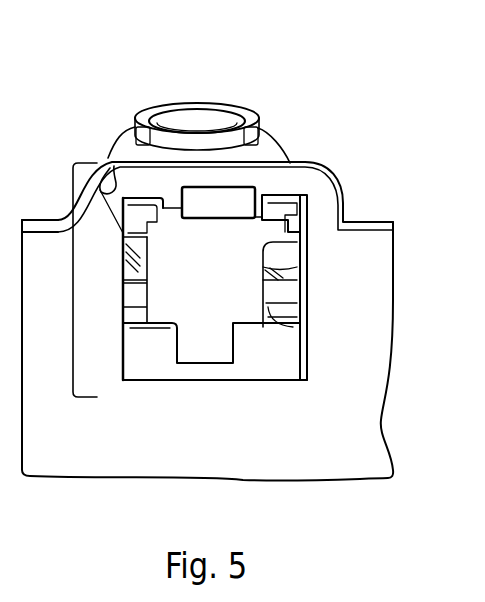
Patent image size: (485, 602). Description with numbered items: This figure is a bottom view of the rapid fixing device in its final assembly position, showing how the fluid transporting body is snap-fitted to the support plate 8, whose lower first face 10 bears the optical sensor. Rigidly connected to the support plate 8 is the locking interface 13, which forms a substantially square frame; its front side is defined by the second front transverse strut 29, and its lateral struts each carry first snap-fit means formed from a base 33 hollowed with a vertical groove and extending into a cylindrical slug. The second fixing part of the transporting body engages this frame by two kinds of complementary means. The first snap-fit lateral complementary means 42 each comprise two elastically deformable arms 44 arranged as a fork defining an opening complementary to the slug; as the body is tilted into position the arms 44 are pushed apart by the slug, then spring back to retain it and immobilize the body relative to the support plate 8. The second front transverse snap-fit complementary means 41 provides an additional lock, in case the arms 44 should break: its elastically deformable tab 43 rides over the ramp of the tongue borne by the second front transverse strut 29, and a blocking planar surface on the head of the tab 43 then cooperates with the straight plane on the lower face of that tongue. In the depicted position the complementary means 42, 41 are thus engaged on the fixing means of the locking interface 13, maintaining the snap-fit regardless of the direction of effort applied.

The support plate 8 is at (373, 228).
The lower first face 10 is at (292, 438).
The locking interface 13 is at (73, 283).
The second front transverse strut 29 is at (212, 158).
The base 33 is at (268, 300).
The second front transverse snap-fit complementary means 41 is at (248, 190).
The first snap-fit lateral complementary means 42 is at (112, 158).
The tab 43 is at (255, 125).
The elastically deformable arms 44 is at (318, 316).